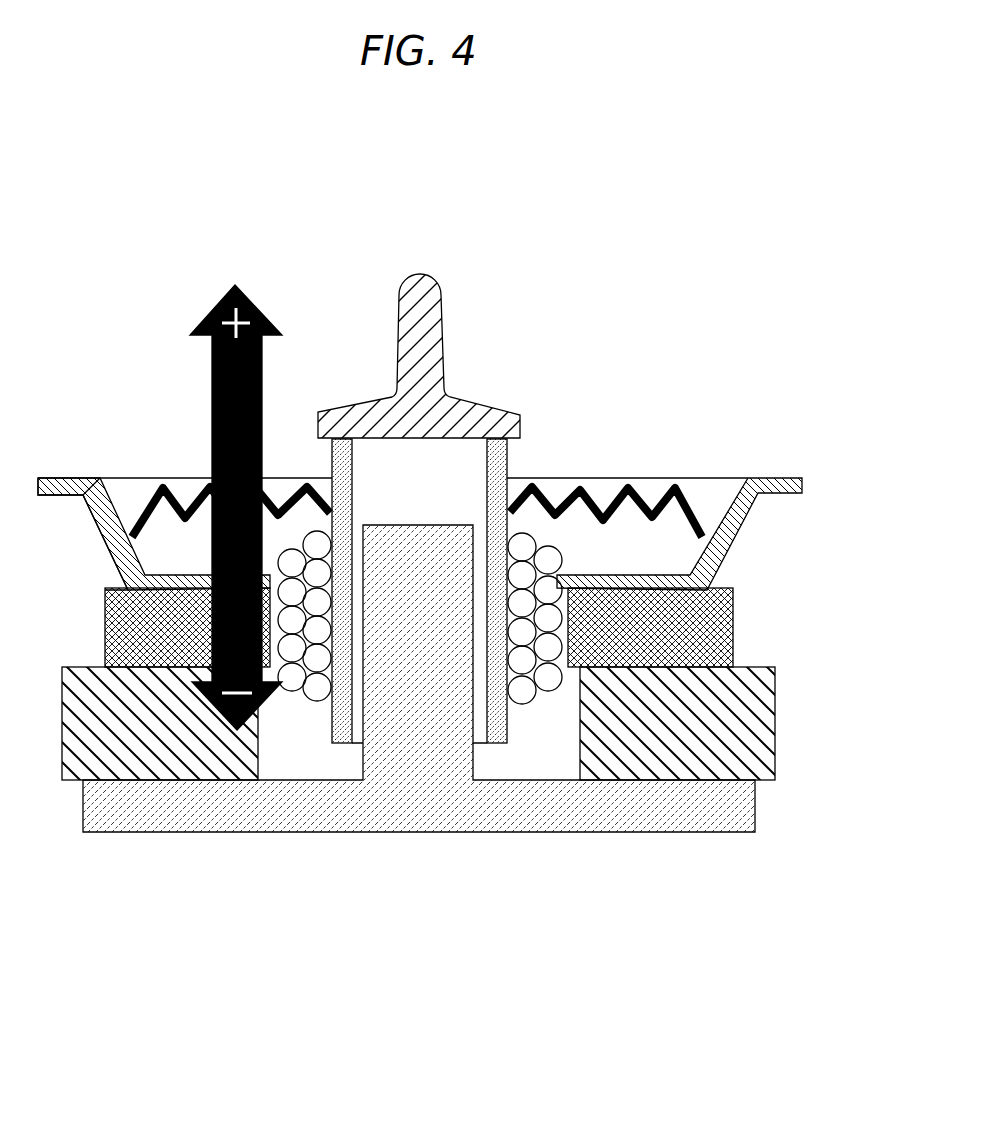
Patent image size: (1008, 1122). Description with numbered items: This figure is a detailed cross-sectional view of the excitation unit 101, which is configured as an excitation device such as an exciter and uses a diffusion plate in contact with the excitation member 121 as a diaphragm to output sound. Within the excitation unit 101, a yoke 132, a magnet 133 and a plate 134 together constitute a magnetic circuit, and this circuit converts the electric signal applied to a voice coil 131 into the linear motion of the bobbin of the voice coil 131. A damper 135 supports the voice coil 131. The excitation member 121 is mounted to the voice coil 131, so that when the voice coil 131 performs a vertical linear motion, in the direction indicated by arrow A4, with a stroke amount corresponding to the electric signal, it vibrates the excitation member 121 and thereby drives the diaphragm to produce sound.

The excitation unit 101 is at (463, 611).
The excitation member 121 is at (415, 272).
The voice coil 131 is at (522, 707).
The yoke 132 is at (423, 827).
The magnet 133 is at (775, 720).
The plate 134 is at (733, 623).
The damper 135 is at (705, 517).
The arrow indicating direction of vertical linear motion A4 is at (212, 408).